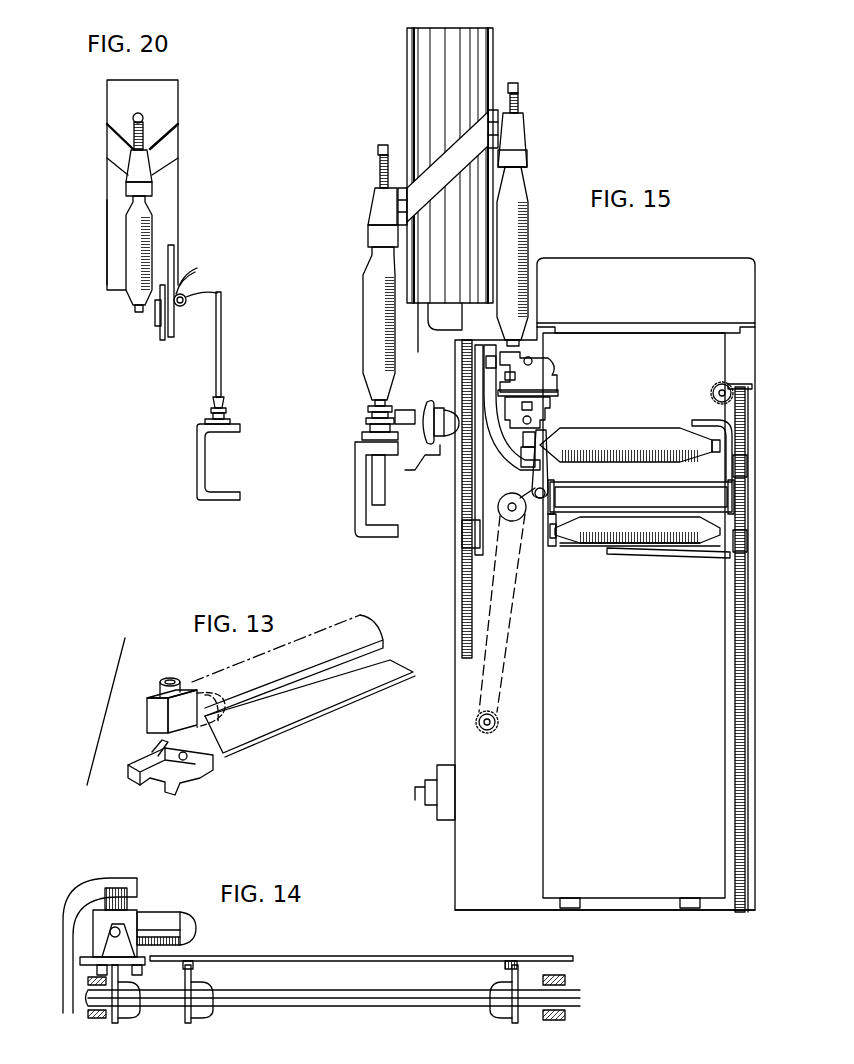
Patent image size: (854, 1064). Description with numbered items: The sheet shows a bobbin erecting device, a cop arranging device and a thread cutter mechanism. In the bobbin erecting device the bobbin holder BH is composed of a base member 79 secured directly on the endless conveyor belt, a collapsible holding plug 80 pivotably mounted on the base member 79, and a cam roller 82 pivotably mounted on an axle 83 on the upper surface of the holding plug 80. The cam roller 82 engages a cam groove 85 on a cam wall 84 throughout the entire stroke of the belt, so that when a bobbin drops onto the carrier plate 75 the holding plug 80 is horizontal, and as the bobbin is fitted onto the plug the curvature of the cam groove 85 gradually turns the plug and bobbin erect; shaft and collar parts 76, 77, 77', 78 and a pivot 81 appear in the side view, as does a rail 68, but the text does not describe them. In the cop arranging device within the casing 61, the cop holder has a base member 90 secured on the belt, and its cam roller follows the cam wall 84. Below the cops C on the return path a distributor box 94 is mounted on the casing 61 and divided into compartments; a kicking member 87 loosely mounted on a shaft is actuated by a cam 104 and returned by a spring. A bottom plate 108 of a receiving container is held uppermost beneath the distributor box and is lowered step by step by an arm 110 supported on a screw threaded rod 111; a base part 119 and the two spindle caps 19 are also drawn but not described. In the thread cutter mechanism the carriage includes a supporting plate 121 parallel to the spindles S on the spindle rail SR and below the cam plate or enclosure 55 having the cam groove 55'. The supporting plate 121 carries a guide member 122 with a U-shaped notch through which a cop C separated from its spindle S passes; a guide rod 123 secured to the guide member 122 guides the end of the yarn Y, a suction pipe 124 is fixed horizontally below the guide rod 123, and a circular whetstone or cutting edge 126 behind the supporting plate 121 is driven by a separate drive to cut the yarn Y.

In FIG. 20, the spindle cap 19 is at (132, 170).
In FIG. 15, the spindle cap 19 is at (372, 236).
In FIG. 20, the cam plate or enclosure 55 is at (94, 231).
In FIG. 20, the cam groove 55' is at (159, 149).
In FIG. 20, the cop C is at (126, 247).
In FIG. 15, the cop C is at (364, 325).
In FIG. 20, the guide member 122 is at (176, 259).
In FIG. 20, the guide rod 123 is at (181, 284).
In FIG. 20, the yarn Y is at (206, 300).
In FIG. 20, the circular whetstone or cutting edge 126 is at (158, 326).
In FIG. 20, the supporting plate 121 is at (165, 346).
In FIG. 20, the suction pipe 124 is at (183, 307).
In FIG. 20, the spindle S is at (230, 370).
In FIG. 20, the spindle rail SR is at (218, 463).
In FIG. 15, the base member 90 is at (552, 361).
In FIG. 15, the distributor box 94 is at (692, 420).
In FIG. 15, the cam wall 84 is at (505, 456).
In FIG. 14, the cam wall 84 is at (93, 890).
In FIG. 15, the kicking member 87 is at (548, 481).
In FIG. 15, the cam 104 is at (556, 497).
In FIG. 15, the bottom plate 108 is at (587, 553).
In FIG. 15, the arm 110 is at (660, 557).
In FIG. 15, the screw threaded rod 111 is at (745, 588).
In FIG. 15, the casing 61 is at (750, 625).
In FIG. 15, the base 119 is at (622, 911).
In FIG. 13, the rail 68 is at (348, 628).
In FIG. 13, the axle 83 is at (170, 679).
In FIG. 13, the cam roller 82 is at (160, 688).
In FIG. 13, the collapsible holding plug 80 is at (147, 709).
In FIG. 14, the collapsible holding plug 80 is at (160, 918).
In FIG. 13, the bobbin holder BH is at (101, 714).
In FIG. 13, the pivot 81 is at (152, 754).
In FIG. 14, the pivot 81 is at (119, 924).
In FIG. 13, the base member 79 is at (135, 780).
In FIG. 14, the base member 79 is at (147, 927).
In FIG. 14, the cam groove 85 is at (90, 902).
In FIG. 14, the carrier plate 75 is at (366, 956).
In FIG. 14, the collar 78 is at (133, 1022).
In FIG. 14, the collar 77' is at (206, 1007).
In FIG. 14, the shaft 76 is at (418, 1009).
In FIG. 14, the collar 77 is at (498, 1000).